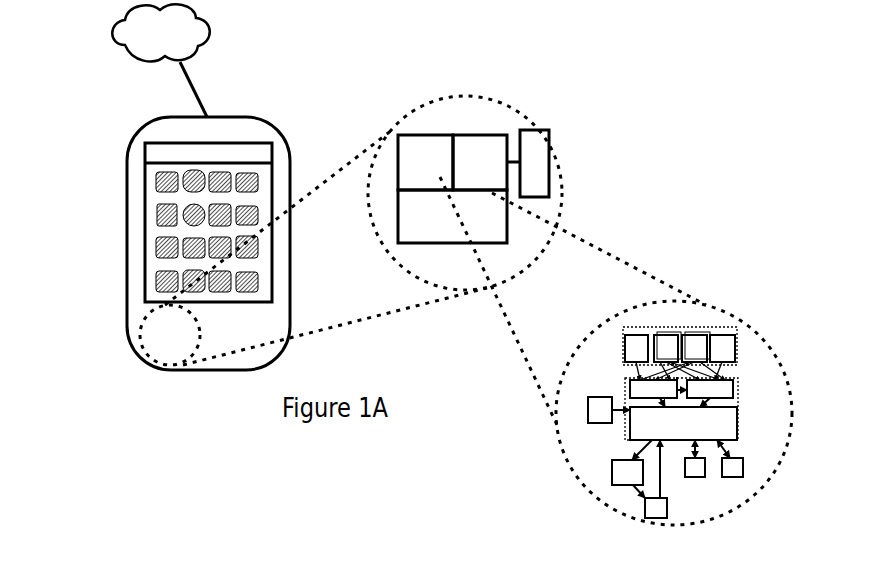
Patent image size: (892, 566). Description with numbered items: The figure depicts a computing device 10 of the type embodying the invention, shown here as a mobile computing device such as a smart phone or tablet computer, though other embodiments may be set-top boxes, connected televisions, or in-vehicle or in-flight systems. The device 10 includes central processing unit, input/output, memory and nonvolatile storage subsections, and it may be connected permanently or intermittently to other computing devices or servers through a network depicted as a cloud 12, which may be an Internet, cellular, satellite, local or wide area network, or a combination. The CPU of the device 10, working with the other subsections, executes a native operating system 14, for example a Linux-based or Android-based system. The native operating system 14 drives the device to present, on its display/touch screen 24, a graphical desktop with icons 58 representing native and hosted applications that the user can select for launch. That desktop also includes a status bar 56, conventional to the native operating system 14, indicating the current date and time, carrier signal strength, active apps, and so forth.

The computing device 10 is at (125, 245).
The cloud 12 is at (161, 60).
The native operating system 14 is at (462, 180).
The display/touch screen 24 is at (281, 191).
The status bar 56 is at (265, 152).
The icons 58 is at (156, 201).